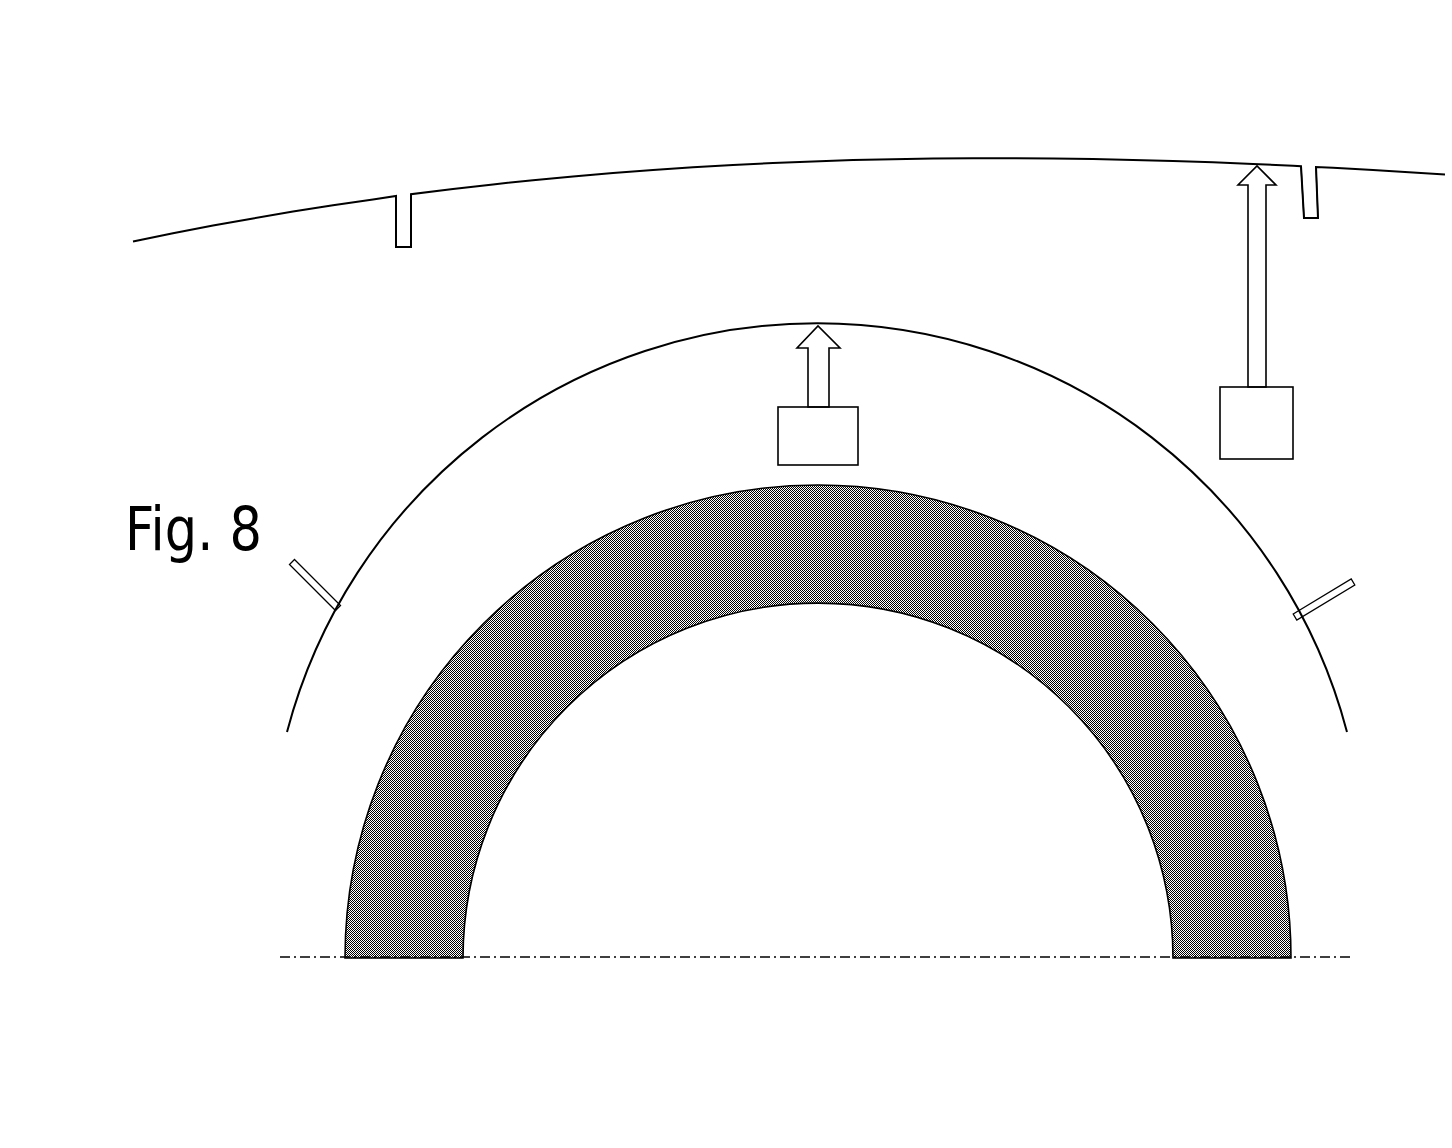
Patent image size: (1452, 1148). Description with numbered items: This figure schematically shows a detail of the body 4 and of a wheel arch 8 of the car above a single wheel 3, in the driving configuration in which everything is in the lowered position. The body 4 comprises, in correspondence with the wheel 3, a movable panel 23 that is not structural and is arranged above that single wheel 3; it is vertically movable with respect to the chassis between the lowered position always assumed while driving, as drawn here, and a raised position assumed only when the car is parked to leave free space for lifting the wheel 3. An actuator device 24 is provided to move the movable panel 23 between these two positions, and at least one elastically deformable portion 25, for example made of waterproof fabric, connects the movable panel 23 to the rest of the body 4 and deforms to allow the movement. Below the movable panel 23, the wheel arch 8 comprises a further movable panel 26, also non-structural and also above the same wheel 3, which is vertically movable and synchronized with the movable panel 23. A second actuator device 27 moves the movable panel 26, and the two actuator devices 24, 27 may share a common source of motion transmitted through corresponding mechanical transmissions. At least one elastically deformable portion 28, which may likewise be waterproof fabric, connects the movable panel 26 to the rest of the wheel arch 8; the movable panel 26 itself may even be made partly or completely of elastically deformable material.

The wheel 3 is at (415, 877).
The body 4 is at (349, 114).
The wheel arch 8 is at (443, 357).
The movable panel 23 is at (778, 160).
The actuator device 24 is at (1256, 312).
The elastically deformable portion 25 is at (415, 215).
The movable panel 26 is at (497, 428).
The actuator device 27 is at (818, 395).
The elastically deformable portion 28 is at (305, 590).